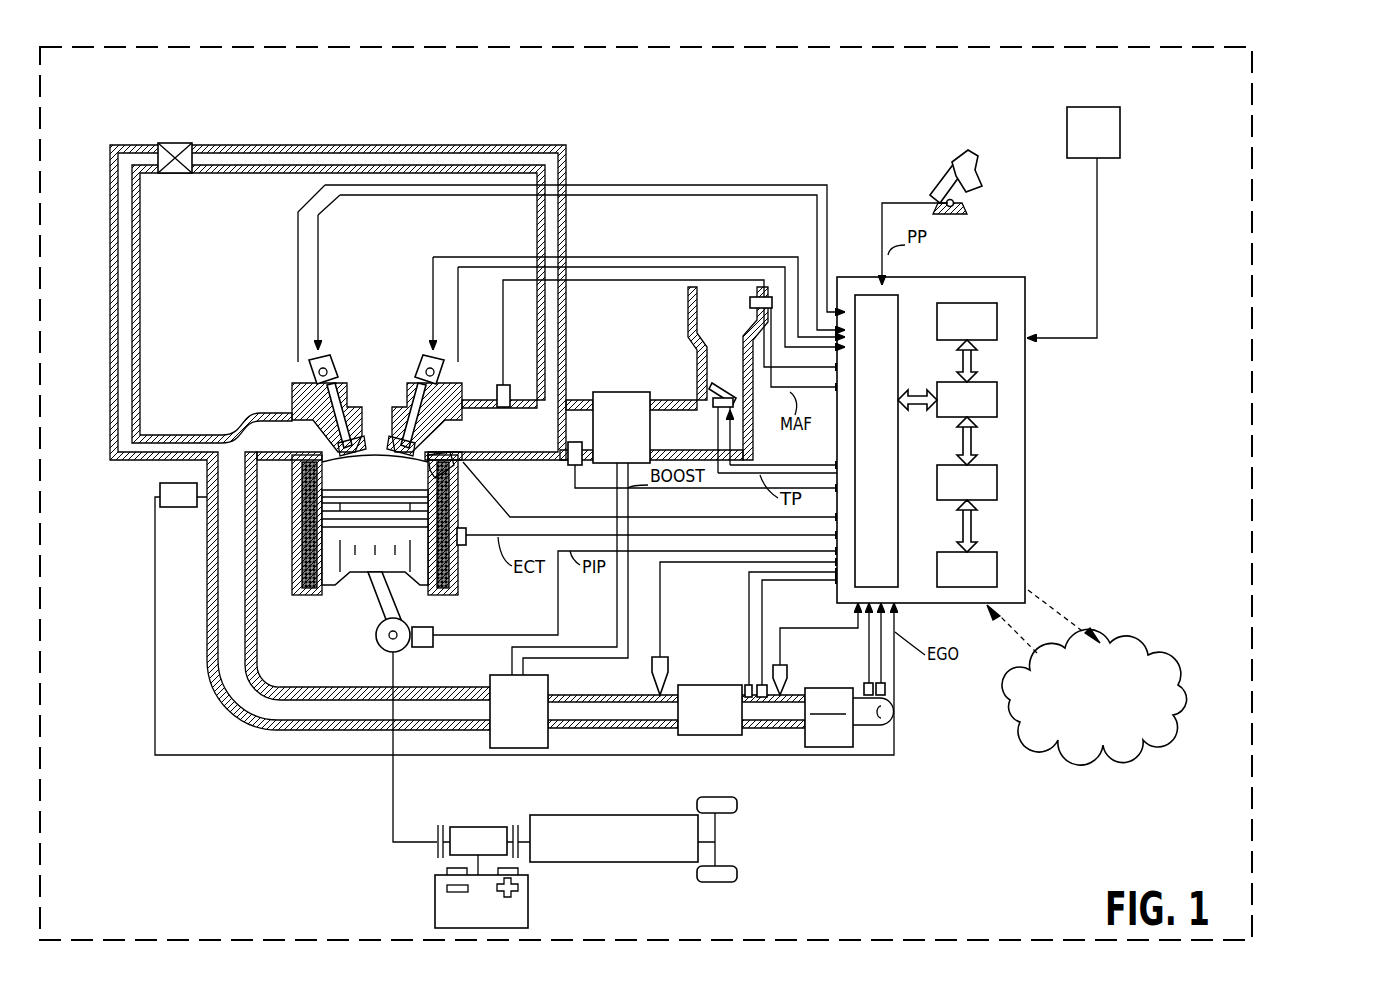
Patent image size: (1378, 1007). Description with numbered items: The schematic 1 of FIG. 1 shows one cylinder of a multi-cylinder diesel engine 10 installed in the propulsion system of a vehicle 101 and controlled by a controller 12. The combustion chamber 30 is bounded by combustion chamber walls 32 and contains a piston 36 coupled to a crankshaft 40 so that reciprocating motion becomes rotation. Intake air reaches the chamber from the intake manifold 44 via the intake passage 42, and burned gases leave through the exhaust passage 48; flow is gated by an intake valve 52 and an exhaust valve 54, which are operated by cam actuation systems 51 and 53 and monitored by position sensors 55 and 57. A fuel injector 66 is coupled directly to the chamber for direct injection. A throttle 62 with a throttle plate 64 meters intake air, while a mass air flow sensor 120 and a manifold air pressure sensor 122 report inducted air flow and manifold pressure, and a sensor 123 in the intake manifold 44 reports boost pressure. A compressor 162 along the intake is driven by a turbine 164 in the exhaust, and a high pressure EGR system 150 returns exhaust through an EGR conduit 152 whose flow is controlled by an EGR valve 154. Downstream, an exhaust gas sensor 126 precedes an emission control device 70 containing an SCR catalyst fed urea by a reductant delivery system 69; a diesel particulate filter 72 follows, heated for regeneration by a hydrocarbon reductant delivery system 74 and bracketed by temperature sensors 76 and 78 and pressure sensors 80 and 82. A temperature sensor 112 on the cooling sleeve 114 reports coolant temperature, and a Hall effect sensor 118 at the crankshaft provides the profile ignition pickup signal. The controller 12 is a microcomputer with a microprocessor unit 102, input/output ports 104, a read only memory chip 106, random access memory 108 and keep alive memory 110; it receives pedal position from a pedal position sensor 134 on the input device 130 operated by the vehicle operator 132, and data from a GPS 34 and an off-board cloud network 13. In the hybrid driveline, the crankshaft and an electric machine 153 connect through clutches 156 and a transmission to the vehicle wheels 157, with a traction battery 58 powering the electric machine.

The vehicle 1 is at (1328, 75).
The vehicle 101 is at (1252, 215).
The internal combustion engine 10 is at (240, 348).
The controller 12 is at (1017, 277).
The off-board cloud network 13 is at (1008, 698).
The combustion chamber 30 is at (318, 470).
The combustion chamber walls 32 is at (315, 582).
The GPS 34 is at (1073, 222).
The piston 36 is at (367, 570).
The crankshaft 40 is at (380, 650).
The intake passage 42 is at (733, 326).
The intake manifold 44 is at (515, 436).
The exhaust passage 48 is at (275, 444).
The cam actuation system 51 is at (438, 360).
The intake valve 52 is at (410, 447).
The cam actuation system 53 is at (328, 358).
The exhaust valve 54 is at (297, 410).
The position sensor 55 is at (445, 383).
The position sensor 57 is at (310, 378).
The traction battery 58 is at (528, 900).
The throttle 62 is at (738, 398).
The throttle plate 64 is at (714, 390).
The fuel injector 66 is at (450, 470).
The reductant delivery system 69 is at (652, 670).
The emission control device 70 is at (718, 720).
The diesel particulate filter 72 is at (837, 744).
The hydrocarbon reductant delivery system 74 is at (786, 665).
The temperature sensor 76 is at (745, 685).
The temperature sensor 78 is at (864, 683).
The pressure sensor 80 is at (758, 685).
The pressure sensor 82 is at (886, 686).
The microprocessor unit 102 is at (998, 397).
The input/output ports 104 is at (900, 303).
The read only memory chip 106 is at (998, 320).
The random access memory 108 is at (998, 480).
The keep alive memory 110 is at (998, 567).
The temperature sensor 112 is at (466, 545).
The cooling sleeve 114 is at (452, 580).
The Hall effect sensor 118 is at (425, 650).
The mass air flow sensor 120 is at (772, 300).
The manifold air pressure sensor 122 is at (502, 386).
The sensor 123 is at (568, 462).
The exhaust gas sensor 126 is at (172, 483).
The input device 130 is at (977, 212).
The vehicle operator 132 is at (980, 174).
The pedal position sensor 134 is at (962, 205).
The high pressure EGR system 150 is at (152, 312).
The EGR conduit 152 is at (136, 262).
The electric machine 153 is at (472, 827).
The EGR valve 154 is at (180, 175).
The clutch 156 is at (437, 840).
The vehicle wheels 157 is at (717, 883).
The compressor 162 is at (634, 434).
The turbine 164 is at (532, 720).